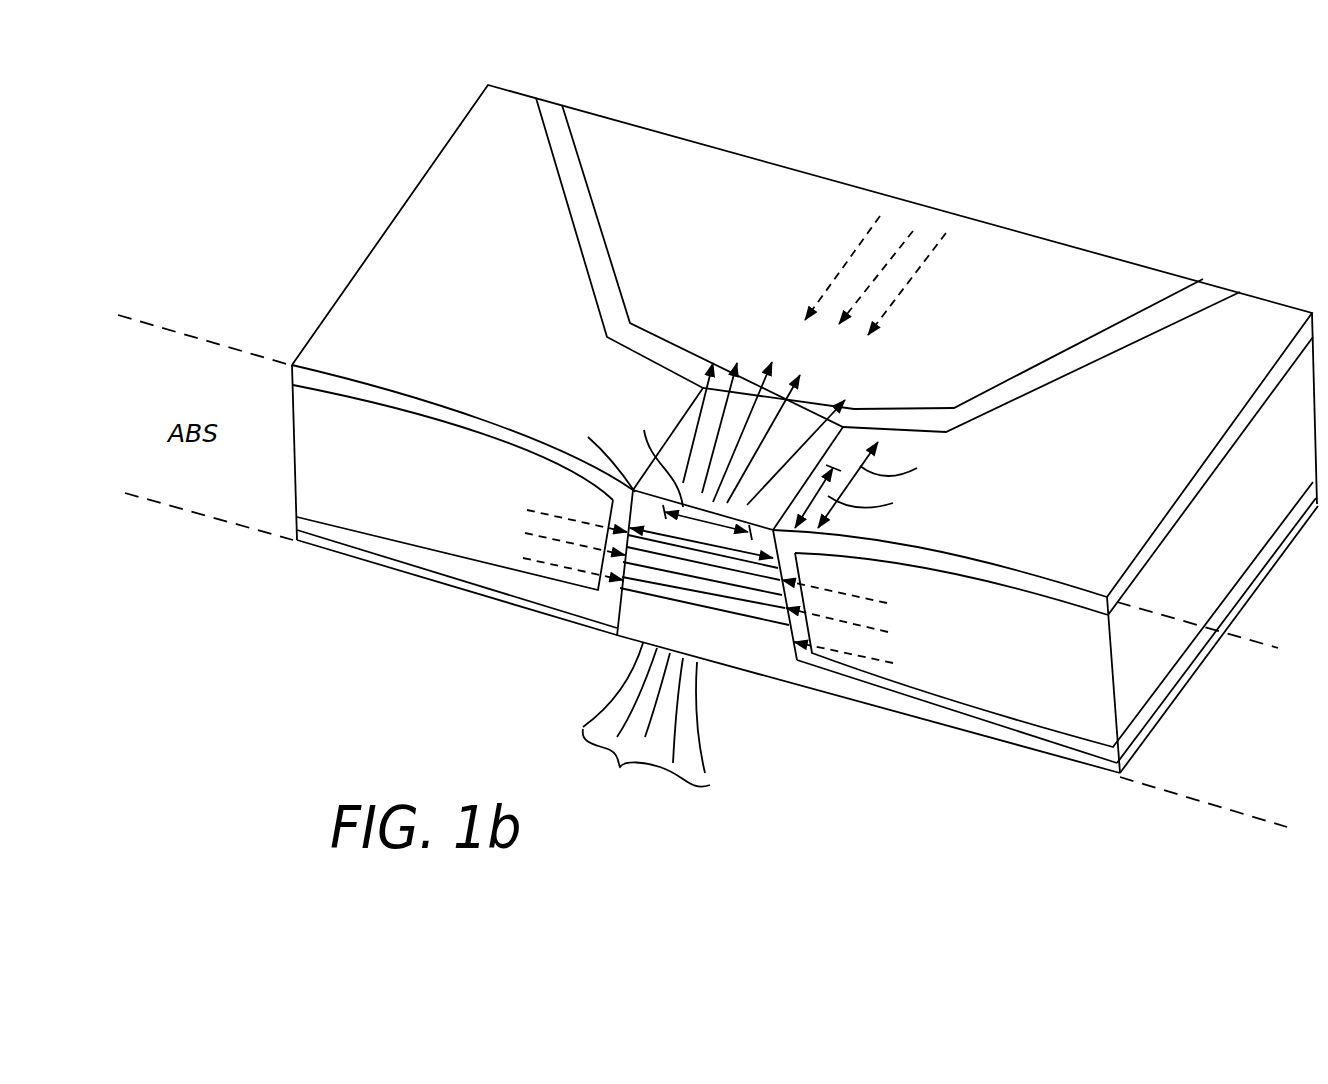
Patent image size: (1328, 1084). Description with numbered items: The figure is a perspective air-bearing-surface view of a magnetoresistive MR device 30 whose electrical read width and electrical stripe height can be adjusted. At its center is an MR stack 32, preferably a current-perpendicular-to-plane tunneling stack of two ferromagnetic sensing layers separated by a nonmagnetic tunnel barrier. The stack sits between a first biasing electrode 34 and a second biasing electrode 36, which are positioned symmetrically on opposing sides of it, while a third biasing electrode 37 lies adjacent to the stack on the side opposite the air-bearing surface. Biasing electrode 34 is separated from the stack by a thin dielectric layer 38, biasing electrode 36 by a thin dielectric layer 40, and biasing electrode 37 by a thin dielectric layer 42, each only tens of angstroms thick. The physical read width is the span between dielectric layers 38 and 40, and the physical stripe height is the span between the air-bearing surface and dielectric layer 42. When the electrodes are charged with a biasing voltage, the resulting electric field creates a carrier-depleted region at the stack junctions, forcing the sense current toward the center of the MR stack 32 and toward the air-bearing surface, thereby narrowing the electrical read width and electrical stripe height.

The MR device 30 is at (982, 175).
The MR stack 32 is at (737, 613).
The first biasing electrode 34 is at (377, 510).
The second biasing electrode 36 is at (1042, 712).
The third biasing electrode 37 is at (898, 194).
The thin dielectric layer 38 is at (618, 615).
The thin dielectric layer 40 is at (793, 662).
The thin dielectric layer 42 is at (1170, 313).